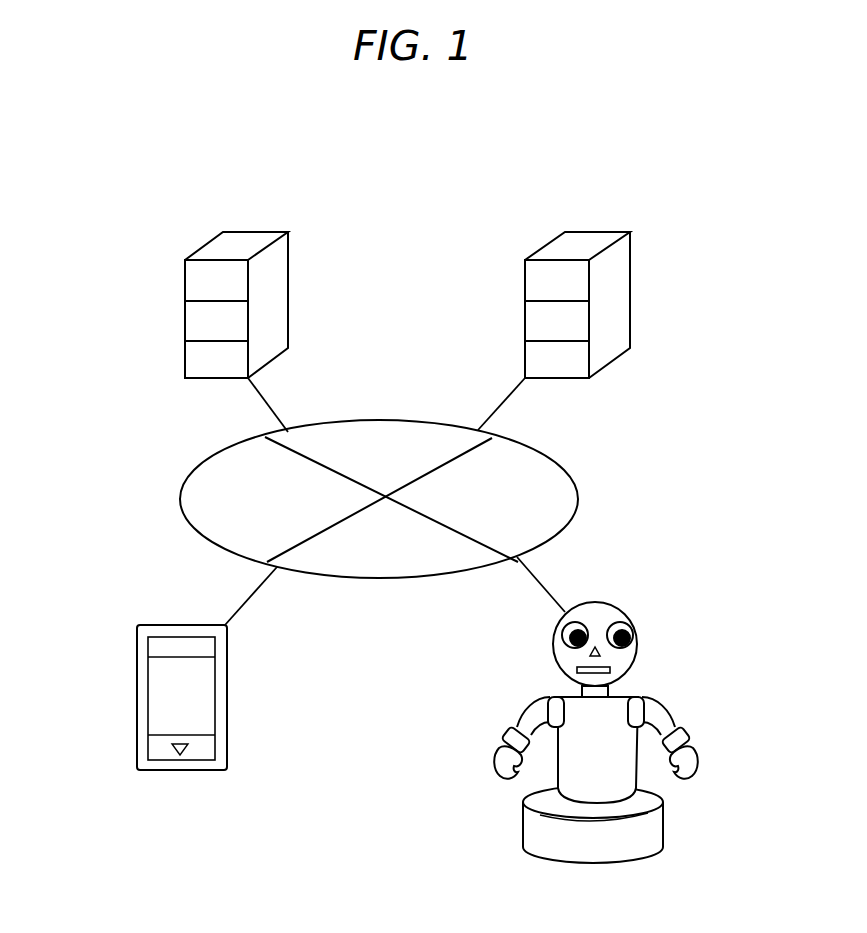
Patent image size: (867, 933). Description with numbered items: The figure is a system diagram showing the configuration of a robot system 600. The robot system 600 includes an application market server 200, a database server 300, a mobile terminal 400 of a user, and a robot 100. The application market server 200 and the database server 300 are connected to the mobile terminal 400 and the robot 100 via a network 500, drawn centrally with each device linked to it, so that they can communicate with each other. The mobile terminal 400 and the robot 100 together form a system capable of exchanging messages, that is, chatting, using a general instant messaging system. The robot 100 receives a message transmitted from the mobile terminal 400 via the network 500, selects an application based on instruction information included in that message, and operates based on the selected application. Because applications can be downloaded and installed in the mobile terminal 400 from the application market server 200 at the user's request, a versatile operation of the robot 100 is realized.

The robot 100 is at (638, 640).
The application market server 200 is at (185, 328).
The database server 300 is at (630, 278).
The mobile terminal 400 is at (227, 703).
The network 500 is at (578, 500).
The robot system 600 is at (464, 264).